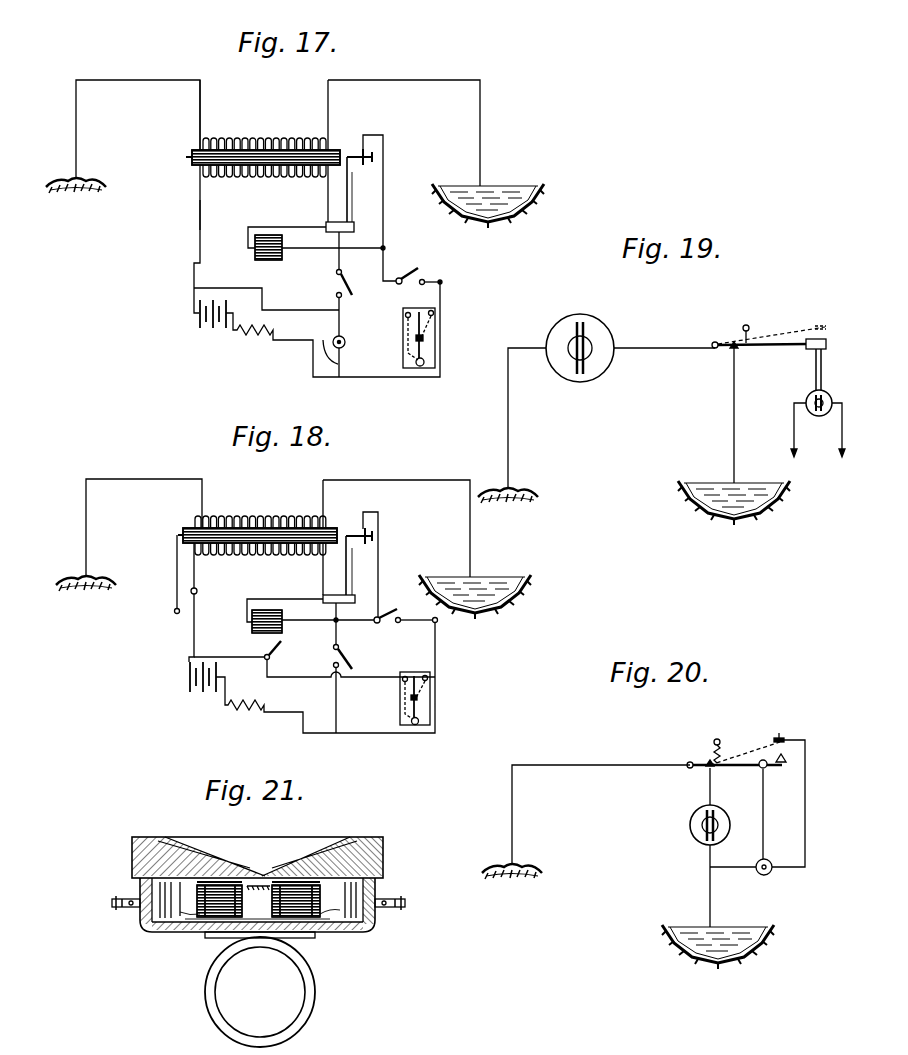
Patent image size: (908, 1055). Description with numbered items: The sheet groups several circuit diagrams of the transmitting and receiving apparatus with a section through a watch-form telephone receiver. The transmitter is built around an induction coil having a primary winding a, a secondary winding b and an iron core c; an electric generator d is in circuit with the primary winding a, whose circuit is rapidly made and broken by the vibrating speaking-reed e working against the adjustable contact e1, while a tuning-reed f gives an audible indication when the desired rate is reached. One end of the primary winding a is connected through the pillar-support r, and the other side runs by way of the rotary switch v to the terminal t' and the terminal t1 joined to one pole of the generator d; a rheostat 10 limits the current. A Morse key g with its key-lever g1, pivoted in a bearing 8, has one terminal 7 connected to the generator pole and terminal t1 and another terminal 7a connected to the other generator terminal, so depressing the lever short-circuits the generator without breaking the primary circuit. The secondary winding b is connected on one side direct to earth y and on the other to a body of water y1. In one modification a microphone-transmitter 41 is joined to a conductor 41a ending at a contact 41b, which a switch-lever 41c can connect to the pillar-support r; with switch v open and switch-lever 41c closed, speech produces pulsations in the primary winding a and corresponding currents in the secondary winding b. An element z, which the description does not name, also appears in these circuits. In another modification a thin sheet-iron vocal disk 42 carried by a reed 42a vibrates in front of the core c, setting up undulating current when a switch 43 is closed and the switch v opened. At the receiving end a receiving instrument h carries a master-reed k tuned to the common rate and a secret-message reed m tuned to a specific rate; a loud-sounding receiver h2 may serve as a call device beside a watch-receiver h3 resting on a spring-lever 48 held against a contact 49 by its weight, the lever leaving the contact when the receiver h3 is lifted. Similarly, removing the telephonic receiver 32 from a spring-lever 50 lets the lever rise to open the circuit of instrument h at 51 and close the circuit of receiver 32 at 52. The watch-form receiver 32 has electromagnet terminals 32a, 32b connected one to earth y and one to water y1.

In FIG. 17, the primary winding a is at (252, 168).
In FIG. 18, the primary winding a is at (262, 555).
In FIG. 17, the secondary winding b is at (267, 141).
In FIG. 18, the secondary winding b is at (250, 518).
In FIG. 17, the iron core c is at (190, 158).
In FIG. 18, the iron core c is at (186, 526).
In FIG. 17, the electric generator d is at (213, 323).
In FIG. 18, the electric generator d is at (204, 688).
In FIG. 17, the speaking-reed e is at (347, 193).
In FIG. 17, the contact-screw e1 is at (365, 191).
In FIG. 18, the contact-screw e1 is at (362, 564).
In FIG. 17, the tuning-reed f is at (356, 197).
In FIG. 17, the pillar-support r is at (326, 231).
In FIG. 18, the pillar-support r is at (339, 599).
In FIG. 17, the electromagnet z is at (270, 260).
In FIG. 18, the electromagnet z is at (272, 638).
In FIG. 17, the earth y is at (80, 190).
In FIG. 18, the earth y is at (84, 588).
In FIG. 19, the earth y is at (538, 486).
In FIG. 20, the earth y is at (512, 880).
In FIG. 17, the body of water y1 is at (516, 184).
In FIG. 18, the body of water y1 is at (482, 575).
In FIG. 19, the body of water y1 is at (742, 483).
In FIG. 20, the body of water y1 is at (722, 926).
In FIG. 17, the second terminal t' is at (190, 215).
In FIG. 17, the terminal t1 is at (442, 282).
In FIG. 17, the rotary switch v is at (419, 268).
In FIG. 18, the rotary switch v is at (406, 607).
In FIG. 17, the key terminal 7 is at (436, 312).
In FIG. 18, the key terminal 7 is at (415, 698).
In FIG. 17, the key terminal 7a is at (415, 303).
In FIG. 17, the bearing 8 is at (424, 344).
In FIG. 17, the Morse key g is at (407, 339).
In FIG. 17, the key-lever g1 is at (406, 349).
In FIG. 17, the rheostat 10 is at (247, 345).
In FIG. 18, the rheostat 10 is at (239, 716).
In FIG. 17, the microphone-transmitter 41 is at (345, 341).
In FIG. 17, the conductor 41a is at (317, 342).
In FIG. 17, the contact 41b is at (336, 296).
In FIG. 17, the switch-lever 41c is at (354, 263).
In FIG. 18, the vocal disk 42 is at (176, 536).
In FIG. 18, the reed 42a is at (176, 584).
In FIG. 18, the switch 43 is at (353, 668).
In FIG. 20, the receiving instrument h is at (690, 822).
In FIG. 19, the loud-sounding receiving instrument h2 is at (570, 318).
In FIG. 19, the watch-receiver h3 is at (826, 393).
In FIG. 19, the master-reed k is at (572, 362).
In FIG. 19, the secret-message reed m is at (590, 336).
In FIG. 19, the spring-lever 48 is at (772, 350).
In FIG. 19, the contact 49 is at (730, 350).
In FIG. 20, the spring-lever 50 is at (752, 768).
In FIG. 20, the contact 51 is at (707, 768).
In FIG. 20, the contact 52 is at (782, 736).
In FIG. 20, the telephonic receiver 32 is at (760, 876).
In FIG. 21, the telephonic receiver 32 is at (257, 942).
In FIG. 21, the terminal 32a is at (384, 909).
In FIG. 21, the terminal 32b is at (132, 909).